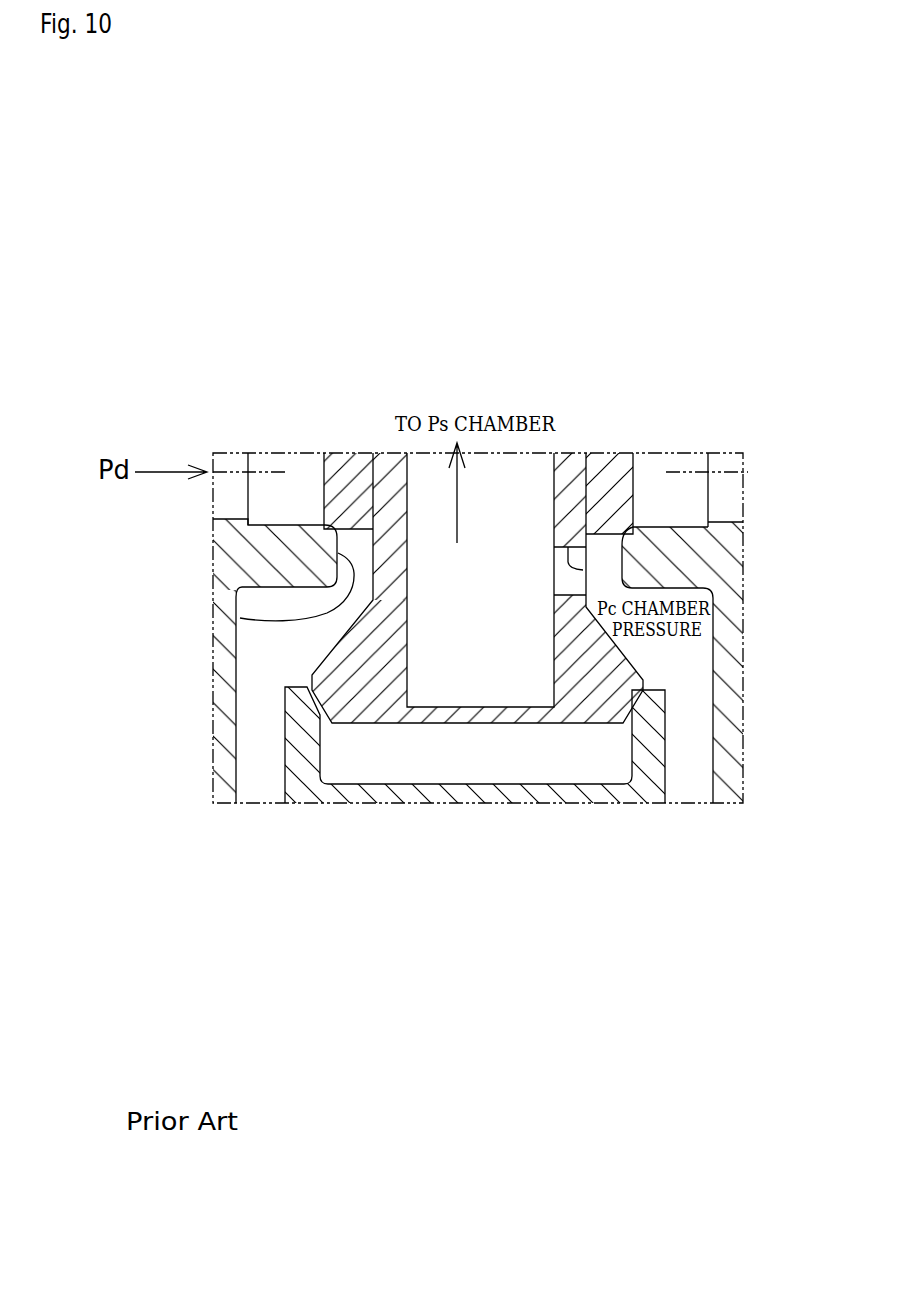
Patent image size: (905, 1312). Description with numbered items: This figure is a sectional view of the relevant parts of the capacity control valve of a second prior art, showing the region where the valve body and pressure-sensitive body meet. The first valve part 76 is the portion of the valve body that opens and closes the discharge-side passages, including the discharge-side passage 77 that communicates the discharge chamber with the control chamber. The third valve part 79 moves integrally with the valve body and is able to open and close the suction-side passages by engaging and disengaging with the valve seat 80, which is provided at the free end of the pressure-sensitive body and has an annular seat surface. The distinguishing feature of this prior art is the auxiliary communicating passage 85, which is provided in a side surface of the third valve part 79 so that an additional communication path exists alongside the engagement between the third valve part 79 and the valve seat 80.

The first valve part 76 is at (345, 493).
The discharge-side passage 77 is at (240, 618).
The third valve part 79 is at (608, 686).
The valve seat 80 is at (303, 790).
The auxiliary communicating passage 85 is at (545, 570).